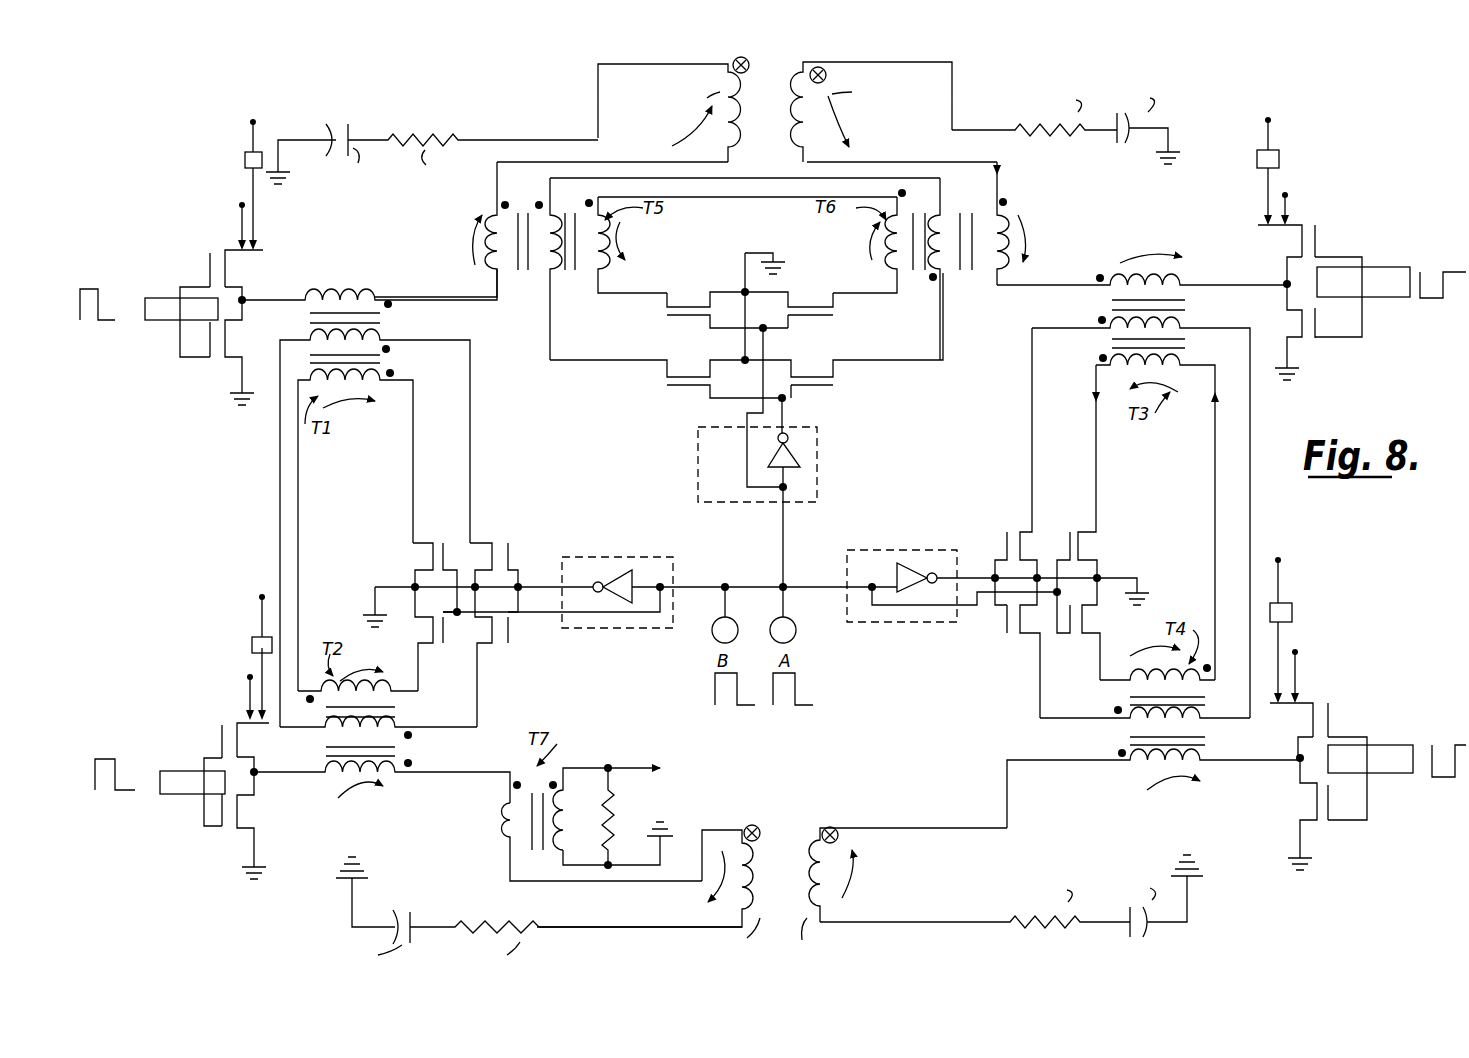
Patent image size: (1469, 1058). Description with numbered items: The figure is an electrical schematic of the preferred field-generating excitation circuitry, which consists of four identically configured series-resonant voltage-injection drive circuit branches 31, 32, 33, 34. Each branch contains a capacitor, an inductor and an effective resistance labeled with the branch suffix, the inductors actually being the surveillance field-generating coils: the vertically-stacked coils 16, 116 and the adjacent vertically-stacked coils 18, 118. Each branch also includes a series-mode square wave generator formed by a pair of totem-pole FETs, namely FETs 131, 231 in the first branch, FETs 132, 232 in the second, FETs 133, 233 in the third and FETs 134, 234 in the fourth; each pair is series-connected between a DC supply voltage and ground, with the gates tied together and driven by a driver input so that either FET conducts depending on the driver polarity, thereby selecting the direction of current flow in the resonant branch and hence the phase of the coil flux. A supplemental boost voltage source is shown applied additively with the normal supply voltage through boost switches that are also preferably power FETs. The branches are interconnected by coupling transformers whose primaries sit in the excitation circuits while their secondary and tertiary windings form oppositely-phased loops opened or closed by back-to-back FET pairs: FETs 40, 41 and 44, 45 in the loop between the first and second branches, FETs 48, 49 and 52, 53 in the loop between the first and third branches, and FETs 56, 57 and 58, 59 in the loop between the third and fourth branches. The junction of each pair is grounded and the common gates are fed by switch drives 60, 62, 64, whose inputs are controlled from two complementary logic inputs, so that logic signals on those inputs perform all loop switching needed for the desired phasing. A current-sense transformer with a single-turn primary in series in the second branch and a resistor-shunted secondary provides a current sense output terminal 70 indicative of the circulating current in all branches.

The field-generating coil 16 is at (731, 50).
The field-generating coil 18 is at (780, 68).
The series-resonant voltage-injection drive circuit branch 31 is at (433, 120).
The series-resonant voltage-injection drive circuit branch 32 is at (289, 898).
The series-resonant voltage-injection drive circuit branch 33 is at (1203, 133).
The series-resonant voltage-injection drive circuit branch 34 is at (1222, 858).
The totem-pole FET 131 is at (228, 270).
The totem-pole FET 231 is at (227, 346).
The totem-pole FET 132 is at (238, 746).
The totem-pole FET 232 is at (237, 815).
The totem-pole FET 133 is at (1300, 240).
The totem-pole FET 233 is at (1298, 320).
The totem-pole FET 134 is at (1312, 718).
The totem-pole FET 234 is at (1316, 797).
The back-to-back FET 40 is at (425, 632).
The back-to-back FET 41 is at (425, 561).
The back-to-back FET 44 is at (490, 630).
The back-to-back FET 45 is at (490, 552).
The back-to-back FET 48 is at (682, 306).
The back-to-back FET 49 is at (810, 306).
The back-to-back FET 52 is at (687, 377).
The back-to-back FET 53 is at (813, 377).
The back-to-back FET 56 is at (1081, 548).
The back-to-back FET 57 is at (1083, 621).
The back-to-back FET 58 is at (1023, 542).
The back-to-back FET 59 is at (1025, 618).
The switch drive 60 is at (627, 553).
The switch drive 62 is at (818, 482).
The switch drive 64 is at (948, 522).
The current sense output terminal 70 is at (627, 767).
The field-generating coil 116 is at (716, 936).
The field-generating coil 118 is at (839, 931).